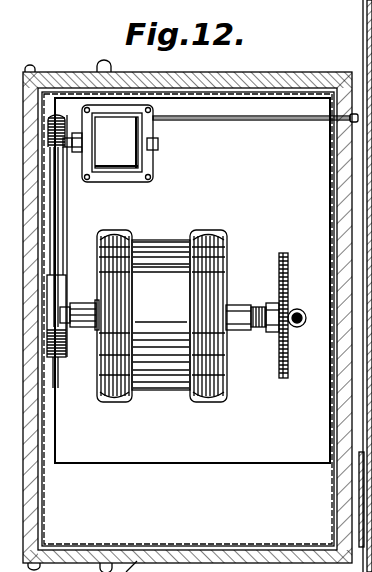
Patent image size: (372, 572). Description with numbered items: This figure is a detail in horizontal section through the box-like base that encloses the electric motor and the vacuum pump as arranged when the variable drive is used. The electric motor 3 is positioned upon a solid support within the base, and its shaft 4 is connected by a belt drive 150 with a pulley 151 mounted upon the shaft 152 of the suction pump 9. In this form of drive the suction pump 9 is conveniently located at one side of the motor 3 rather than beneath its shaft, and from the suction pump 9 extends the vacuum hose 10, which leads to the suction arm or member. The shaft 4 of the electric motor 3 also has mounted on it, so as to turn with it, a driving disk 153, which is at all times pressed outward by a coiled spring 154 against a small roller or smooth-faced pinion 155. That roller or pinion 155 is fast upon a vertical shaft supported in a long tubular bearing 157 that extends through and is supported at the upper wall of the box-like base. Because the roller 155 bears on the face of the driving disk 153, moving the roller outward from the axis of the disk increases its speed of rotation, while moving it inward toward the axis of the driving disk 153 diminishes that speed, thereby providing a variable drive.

The electric motor 3 is at (165, 257).
The shaft 4 is at (67, 308).
The suction pump 9 is at (125, 152).
The vacuum hose 10 is at (275, 121).
The belt drive 150 is at (61, 217).
The pulley 151 is at (65, 164).
The shaft 152 is at (68, 132).
The driving disk 153 is at (279, 262).
The coiled spring 154 is at (258, 305).
The roller or smooth-faced pinion 155 is at (301, 327).
The tubular bearing 157 is at (301, 309).